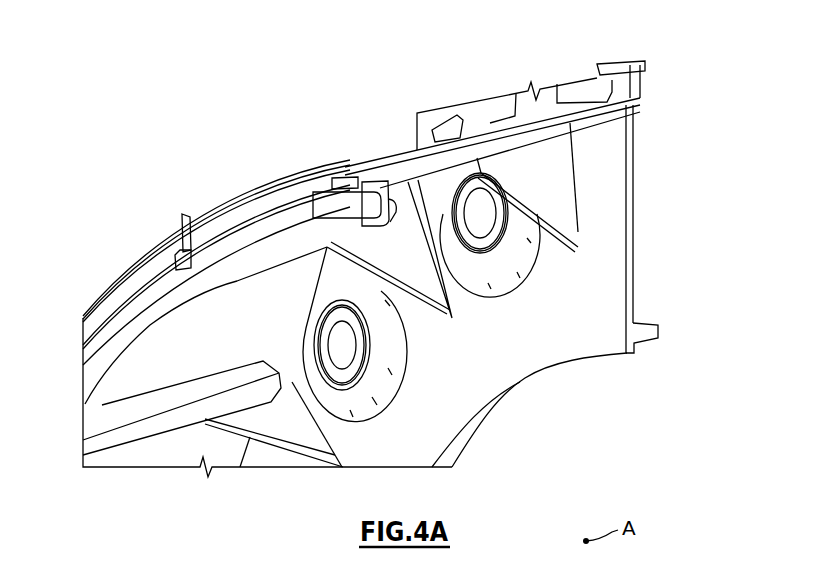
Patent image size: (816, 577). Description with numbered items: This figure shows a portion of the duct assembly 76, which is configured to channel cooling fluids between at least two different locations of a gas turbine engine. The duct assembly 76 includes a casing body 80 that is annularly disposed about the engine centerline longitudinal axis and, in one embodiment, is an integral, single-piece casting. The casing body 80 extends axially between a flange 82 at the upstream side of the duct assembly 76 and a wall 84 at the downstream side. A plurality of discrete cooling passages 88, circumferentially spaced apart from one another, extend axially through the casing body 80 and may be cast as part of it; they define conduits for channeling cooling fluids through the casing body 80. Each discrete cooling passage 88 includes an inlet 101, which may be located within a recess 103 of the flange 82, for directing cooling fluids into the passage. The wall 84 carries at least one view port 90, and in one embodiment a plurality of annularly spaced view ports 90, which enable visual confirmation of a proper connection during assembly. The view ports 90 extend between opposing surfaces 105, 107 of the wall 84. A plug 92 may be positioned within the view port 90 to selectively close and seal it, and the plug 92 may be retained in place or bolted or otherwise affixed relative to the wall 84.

The duct assembly 76 is at (325, 108).
The casing body 80 is at (395, 156).
The flange 82 is at (367, 172).
The wall 84 is at (620, 154).
The discrete cooling passages 88 is at (331, 203).
The view port 90 is at (358, 374).
The plug 92 is at (505, 225).
The inlet 101 is at (300, 194).
The recess 103 is at (388, 199).
The surface of the wall 105 is at (607, 345).
The surface of the wall 107 is at (630, 272).